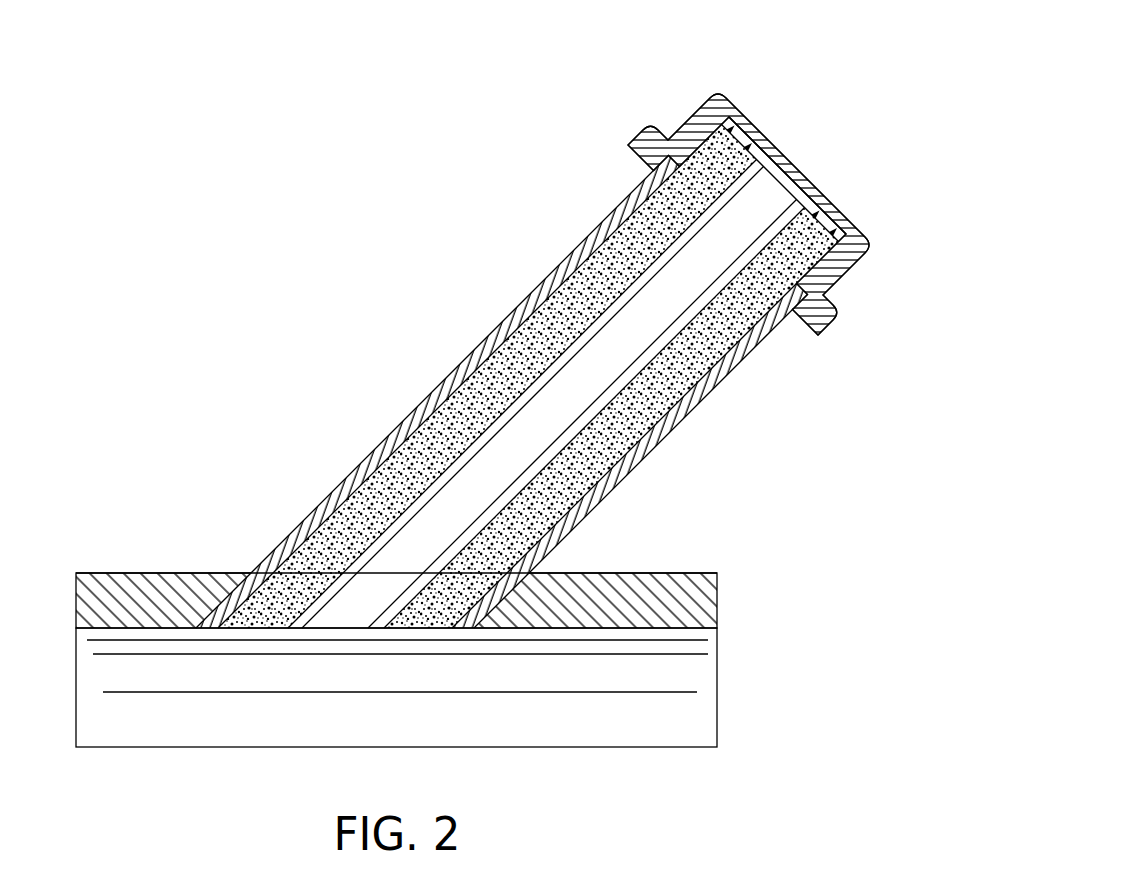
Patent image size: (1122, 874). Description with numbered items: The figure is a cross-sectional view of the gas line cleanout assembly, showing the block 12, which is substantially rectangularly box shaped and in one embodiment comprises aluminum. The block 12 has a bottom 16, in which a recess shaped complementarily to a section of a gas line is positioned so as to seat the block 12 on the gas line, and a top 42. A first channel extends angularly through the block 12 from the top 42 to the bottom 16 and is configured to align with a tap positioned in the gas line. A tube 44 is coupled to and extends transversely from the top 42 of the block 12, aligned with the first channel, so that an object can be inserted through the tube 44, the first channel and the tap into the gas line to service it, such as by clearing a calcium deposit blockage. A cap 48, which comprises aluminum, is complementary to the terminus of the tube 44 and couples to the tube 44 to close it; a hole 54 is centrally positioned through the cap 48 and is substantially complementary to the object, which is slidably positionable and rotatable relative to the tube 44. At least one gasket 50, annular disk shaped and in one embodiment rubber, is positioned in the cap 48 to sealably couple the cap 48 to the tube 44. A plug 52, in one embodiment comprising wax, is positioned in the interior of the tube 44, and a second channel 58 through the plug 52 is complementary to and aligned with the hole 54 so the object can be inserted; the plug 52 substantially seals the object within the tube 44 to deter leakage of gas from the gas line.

The block 12 is at (685, 600).
The bottom 16 is at (147, 746).
The top 42 is at (143, 575).
The tube 44 is at (410, 412).
The cap 48 is at (868, 237).
The gasket 50 is at (752, 150).
The plug 52 is at (500, 367).
The hole 54 is at (790, 172).
The second channel 58 is at (588, 365).